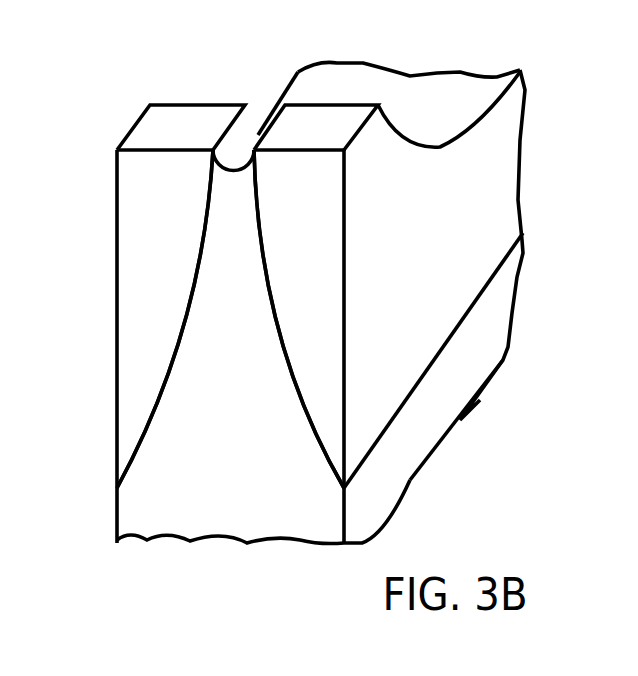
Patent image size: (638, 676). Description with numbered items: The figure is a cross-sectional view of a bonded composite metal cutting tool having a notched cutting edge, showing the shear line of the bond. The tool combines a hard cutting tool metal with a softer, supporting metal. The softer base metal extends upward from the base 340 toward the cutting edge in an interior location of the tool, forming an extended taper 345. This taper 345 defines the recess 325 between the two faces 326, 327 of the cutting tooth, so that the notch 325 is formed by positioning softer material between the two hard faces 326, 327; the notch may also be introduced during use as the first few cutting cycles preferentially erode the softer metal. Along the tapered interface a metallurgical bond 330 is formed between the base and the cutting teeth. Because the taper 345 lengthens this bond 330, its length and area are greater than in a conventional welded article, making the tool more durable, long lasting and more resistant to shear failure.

The recess 325 is at (255, 150).
The face of the cutting tooth 326 is at (320, 202).
The face of the cutting tooth 327 is at (130, 182).
The metallurgical bond 330 is at (177, 340).
The base 340 is at (113, 488).
The extended taper 345 is at (245, 283).